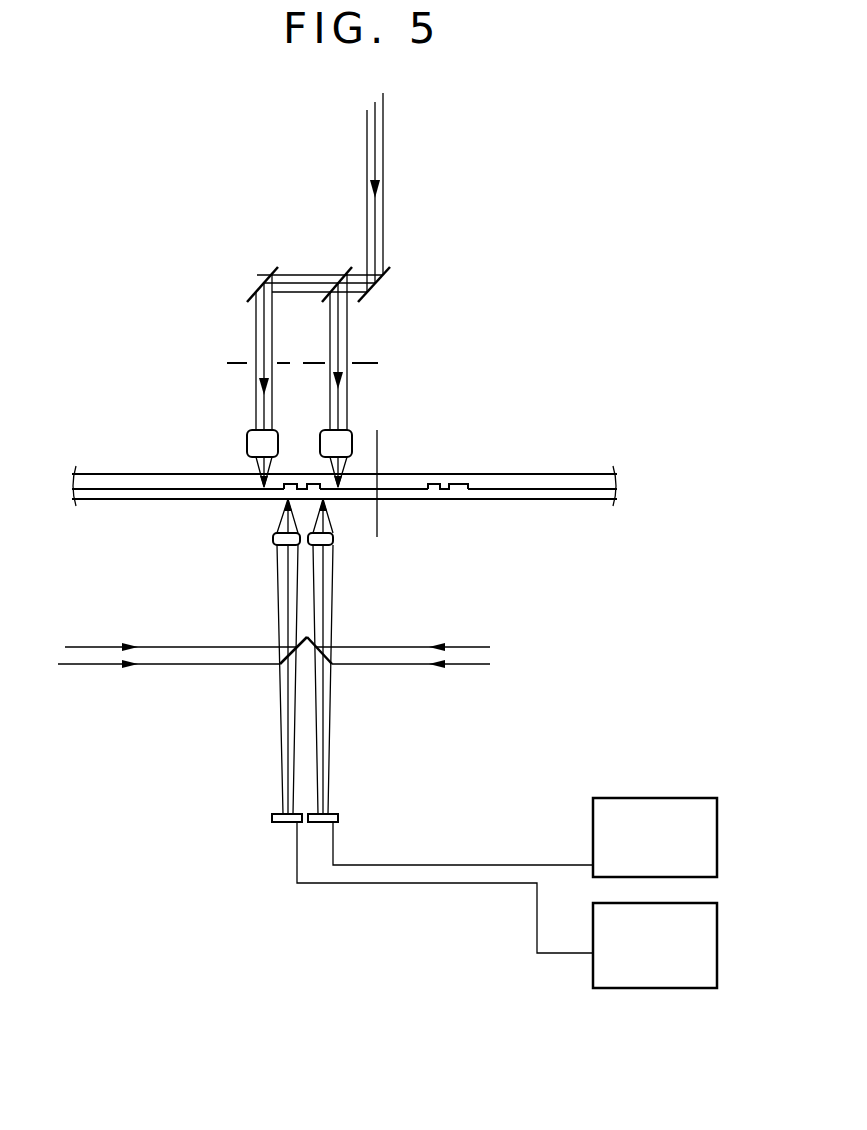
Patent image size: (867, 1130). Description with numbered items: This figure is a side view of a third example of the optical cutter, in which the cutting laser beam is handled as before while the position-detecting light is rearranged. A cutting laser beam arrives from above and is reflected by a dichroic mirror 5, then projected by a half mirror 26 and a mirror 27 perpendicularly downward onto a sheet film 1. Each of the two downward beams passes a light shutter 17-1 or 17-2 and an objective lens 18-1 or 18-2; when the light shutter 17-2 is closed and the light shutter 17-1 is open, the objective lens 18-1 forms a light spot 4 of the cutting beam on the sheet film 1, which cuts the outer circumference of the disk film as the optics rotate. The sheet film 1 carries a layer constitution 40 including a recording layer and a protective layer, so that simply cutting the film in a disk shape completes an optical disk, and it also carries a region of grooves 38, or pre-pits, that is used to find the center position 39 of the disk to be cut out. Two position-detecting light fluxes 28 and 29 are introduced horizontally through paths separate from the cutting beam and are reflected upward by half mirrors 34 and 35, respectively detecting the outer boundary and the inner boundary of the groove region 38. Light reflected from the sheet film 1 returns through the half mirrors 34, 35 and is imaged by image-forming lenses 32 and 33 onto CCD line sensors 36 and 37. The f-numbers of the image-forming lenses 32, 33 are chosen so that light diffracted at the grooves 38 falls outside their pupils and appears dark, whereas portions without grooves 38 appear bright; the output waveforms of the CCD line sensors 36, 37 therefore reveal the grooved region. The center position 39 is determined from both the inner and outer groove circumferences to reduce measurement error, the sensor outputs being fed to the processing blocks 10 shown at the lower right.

The sheet film 1 is at (108, 482).
The light spot 4 is at (262, 485).
The dichroic mirror 5 is at (380, 280).
The signal processing circuit 10 is at (638, 807).
The light shutter 17-1 is at (230, 362).
The light shutter 17-2 is at (367, 362).
The objective lens 18-1 is at (248, 435).
The objective lens 18-2 is at (350, 437).
The half mirror 26 is at (343, 283).
The mirror 27 is at (265, 283).
The position-detecting light flux 28 is at (103, 658).
The position-detecting light flux 29 is at (473, 660).
The image-forming lens 32 is at (273, 537).
The image-forming lens 33 is at (333, 543).
The half mirror 34 is at (273, 672).
The half mirror 35 is at (337, 672).
The CCD line sensor 36 is at (272, 815).
The CCD line sensor 37 is at (338, 817).
The grooves 38 is at (302, 485).
The center position 39 is at (380, 473).
The layer constitution 40 is at (103, 493).